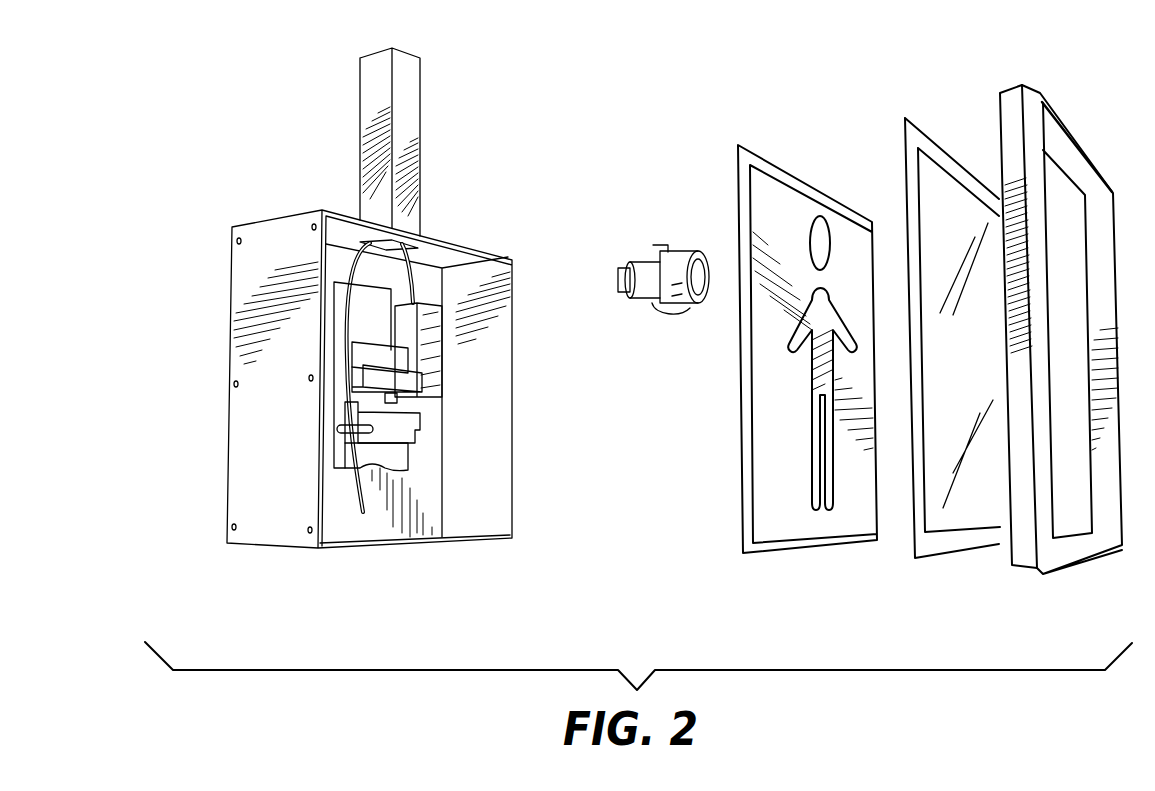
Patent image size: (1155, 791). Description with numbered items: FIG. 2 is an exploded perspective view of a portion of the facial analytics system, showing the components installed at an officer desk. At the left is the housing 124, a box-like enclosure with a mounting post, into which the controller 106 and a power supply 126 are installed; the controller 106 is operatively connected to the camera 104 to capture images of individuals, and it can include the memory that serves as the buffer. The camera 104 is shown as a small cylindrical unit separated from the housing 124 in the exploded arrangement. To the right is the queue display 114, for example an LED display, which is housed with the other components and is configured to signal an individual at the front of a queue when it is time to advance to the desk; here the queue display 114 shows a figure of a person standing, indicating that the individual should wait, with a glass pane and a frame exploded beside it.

The housing 124 is at (322, 210).
The controller 106 is at (363, 328).
The power supply 126 is at (432, 323).
The camera 104 is at (677, 292).
The queue display 114 is at (790, 216).